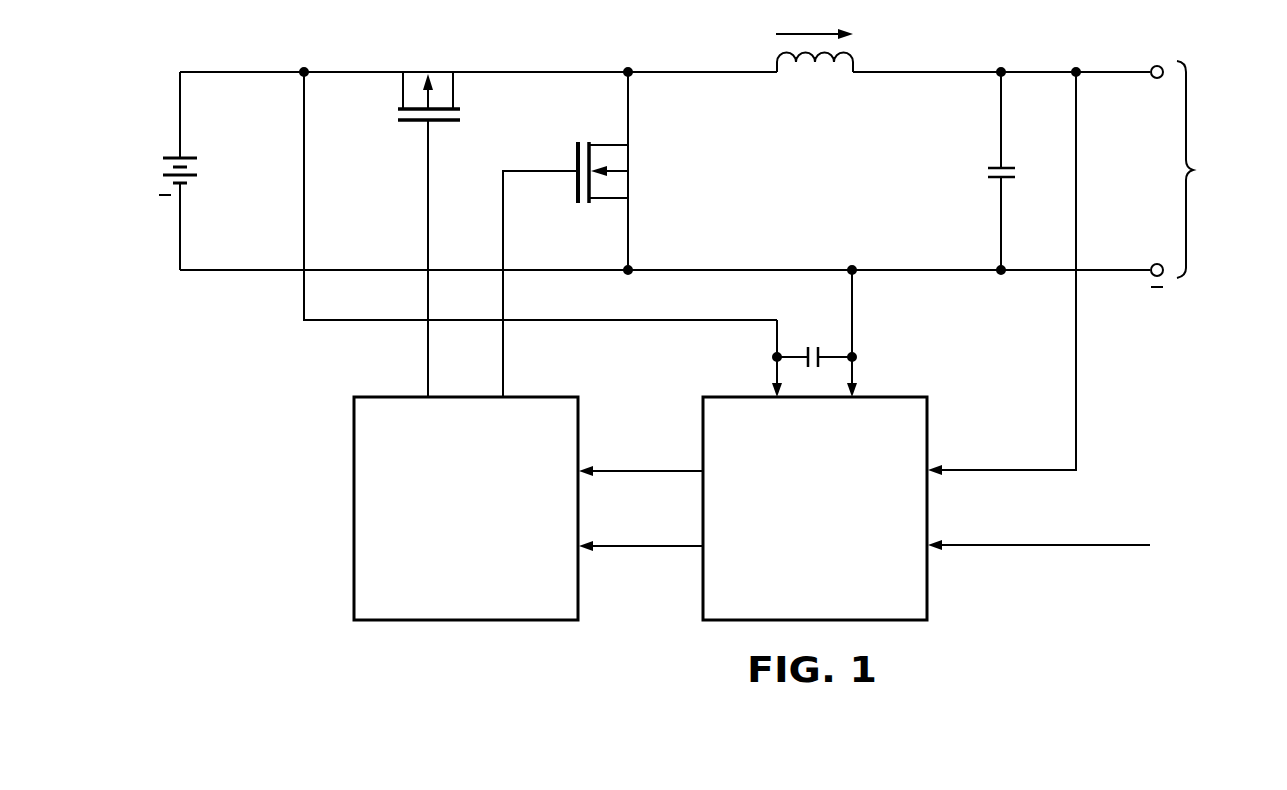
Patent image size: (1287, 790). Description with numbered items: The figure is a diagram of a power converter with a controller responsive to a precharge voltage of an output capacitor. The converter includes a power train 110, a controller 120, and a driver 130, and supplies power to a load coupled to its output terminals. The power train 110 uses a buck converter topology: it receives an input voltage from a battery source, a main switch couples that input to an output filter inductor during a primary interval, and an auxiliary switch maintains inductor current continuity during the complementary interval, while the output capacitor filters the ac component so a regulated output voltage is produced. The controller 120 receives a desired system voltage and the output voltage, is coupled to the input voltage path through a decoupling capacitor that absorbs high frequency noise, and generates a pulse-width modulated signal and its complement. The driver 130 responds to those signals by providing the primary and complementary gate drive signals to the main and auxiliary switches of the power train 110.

The power train 110 is at (838, 185).
The controller 120 is at (838, 547).
The driver 130 is at (490, 547).